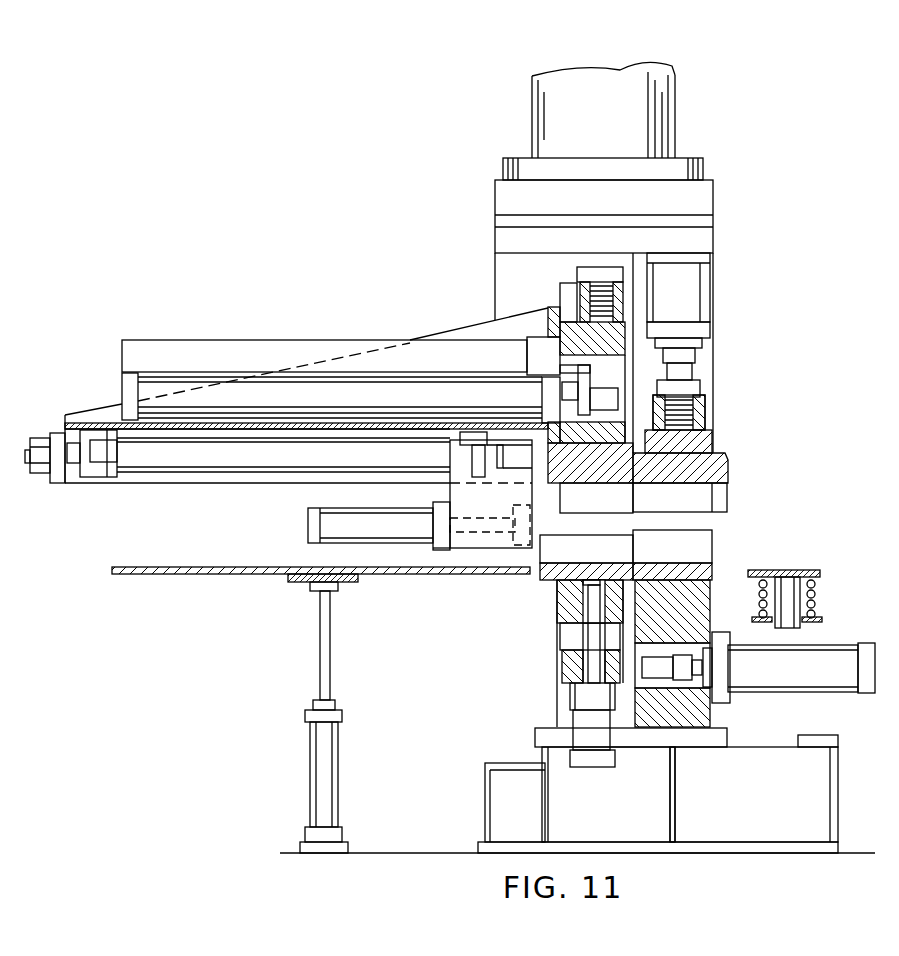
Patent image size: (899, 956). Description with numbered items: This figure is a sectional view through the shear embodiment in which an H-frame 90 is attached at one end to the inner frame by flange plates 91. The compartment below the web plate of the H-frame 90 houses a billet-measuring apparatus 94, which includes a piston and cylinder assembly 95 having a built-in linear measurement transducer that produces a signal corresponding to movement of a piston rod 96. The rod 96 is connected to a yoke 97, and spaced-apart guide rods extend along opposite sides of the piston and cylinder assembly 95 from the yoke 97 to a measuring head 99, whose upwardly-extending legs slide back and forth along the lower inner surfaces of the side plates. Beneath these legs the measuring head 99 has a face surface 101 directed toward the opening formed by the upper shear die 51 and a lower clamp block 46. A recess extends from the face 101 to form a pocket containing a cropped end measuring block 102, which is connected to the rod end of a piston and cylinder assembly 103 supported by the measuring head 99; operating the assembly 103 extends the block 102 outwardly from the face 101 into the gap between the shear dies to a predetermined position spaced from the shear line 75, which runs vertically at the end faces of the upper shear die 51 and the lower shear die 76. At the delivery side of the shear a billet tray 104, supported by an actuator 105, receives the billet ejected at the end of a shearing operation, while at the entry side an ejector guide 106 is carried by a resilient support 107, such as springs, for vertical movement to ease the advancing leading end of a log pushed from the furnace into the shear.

The lower clamp block 46 is at (553, 586).
The upper shear die 51 is at (579, 510).
The shear line 75 is at (633, 368).
The lower shear die 76 is at (713, 580).
The H-frame 90 is at (104, 421).
The flange plates 91 is at (546, 323).
The billet-measuring apparatus 94 is at (410, 550).
The piston and cylinder assembly 95 is at (158, 474).
The piston rod 96 is at (73, 469).
The yoke 97 is at (59, 484).
The measuring head 99 is at (513, 551).
The face surface 101 is at (532, 520).
The cropped end measuring block 102 is at (490, 553).
The piston and cylinder assembly 103 is at (308, 518).
The billet tray 104 is at (243, 576).
The actuator 105 is at (310, 768).
The ejector guide 106 is at (800, 574).
The resilient support 107 is at (814, 594).